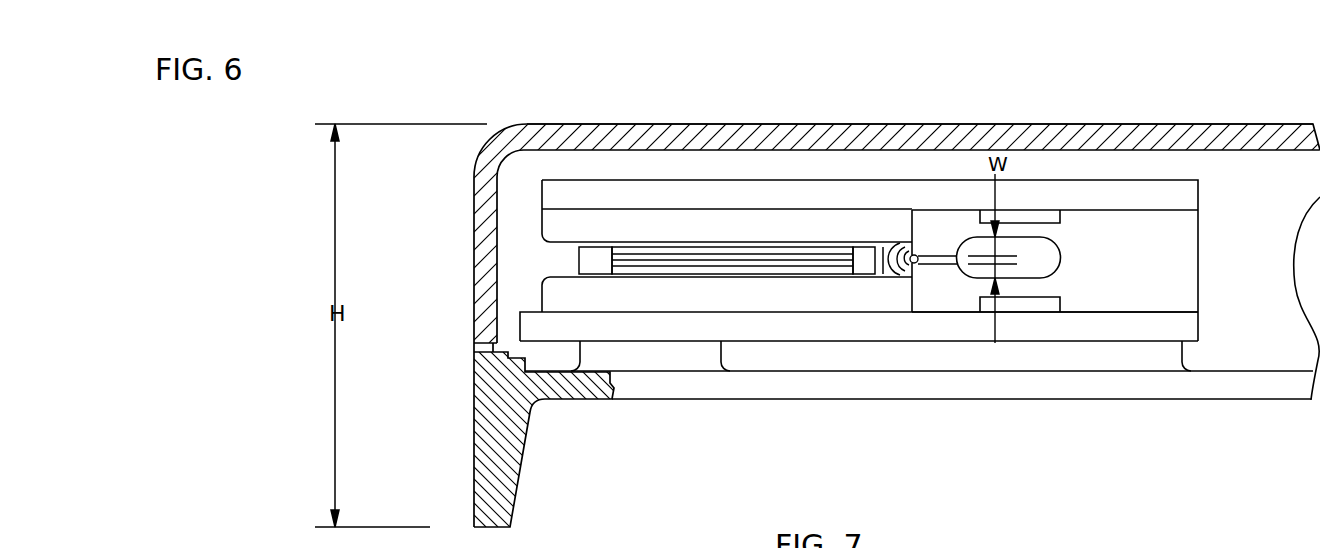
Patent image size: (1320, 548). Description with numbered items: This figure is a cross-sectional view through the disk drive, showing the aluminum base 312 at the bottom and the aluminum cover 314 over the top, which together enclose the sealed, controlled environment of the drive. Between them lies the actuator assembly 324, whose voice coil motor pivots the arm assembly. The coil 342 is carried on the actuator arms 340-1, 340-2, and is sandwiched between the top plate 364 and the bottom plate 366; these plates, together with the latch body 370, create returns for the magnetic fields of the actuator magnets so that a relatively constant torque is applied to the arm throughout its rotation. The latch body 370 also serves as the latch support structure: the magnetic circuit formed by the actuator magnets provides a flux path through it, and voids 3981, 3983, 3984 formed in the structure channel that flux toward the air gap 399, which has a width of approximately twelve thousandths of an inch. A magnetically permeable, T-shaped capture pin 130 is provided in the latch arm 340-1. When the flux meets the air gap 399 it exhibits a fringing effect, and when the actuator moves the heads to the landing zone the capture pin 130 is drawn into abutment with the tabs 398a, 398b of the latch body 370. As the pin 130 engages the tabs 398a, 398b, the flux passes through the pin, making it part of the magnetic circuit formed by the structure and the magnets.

The cover 314 is at (1215, 135).
The base 312 is at (537, 395).
The actuator assembly 324 is at (921, 166).
The top plate 364 is at (648, 196).
The bottom plate 366 is at (732, 328).
The latch body 370 is at (1180, 224).
The coil 342 is at (723, 259).
The actuator latch arm 340-1 is at (866, 259).
The actuator arm 340-2 is at (591, 262).
The capture pin 130 is at (916, 256).
The tab 398a is at (913, 228).
The tab 398b is at (918, 292).
The void 3981 is at (1040, 254).
The void 3983 is at (1005, 217).
The void 3984 is at (1020, 299).
The air gap 399 is at (935, 261).